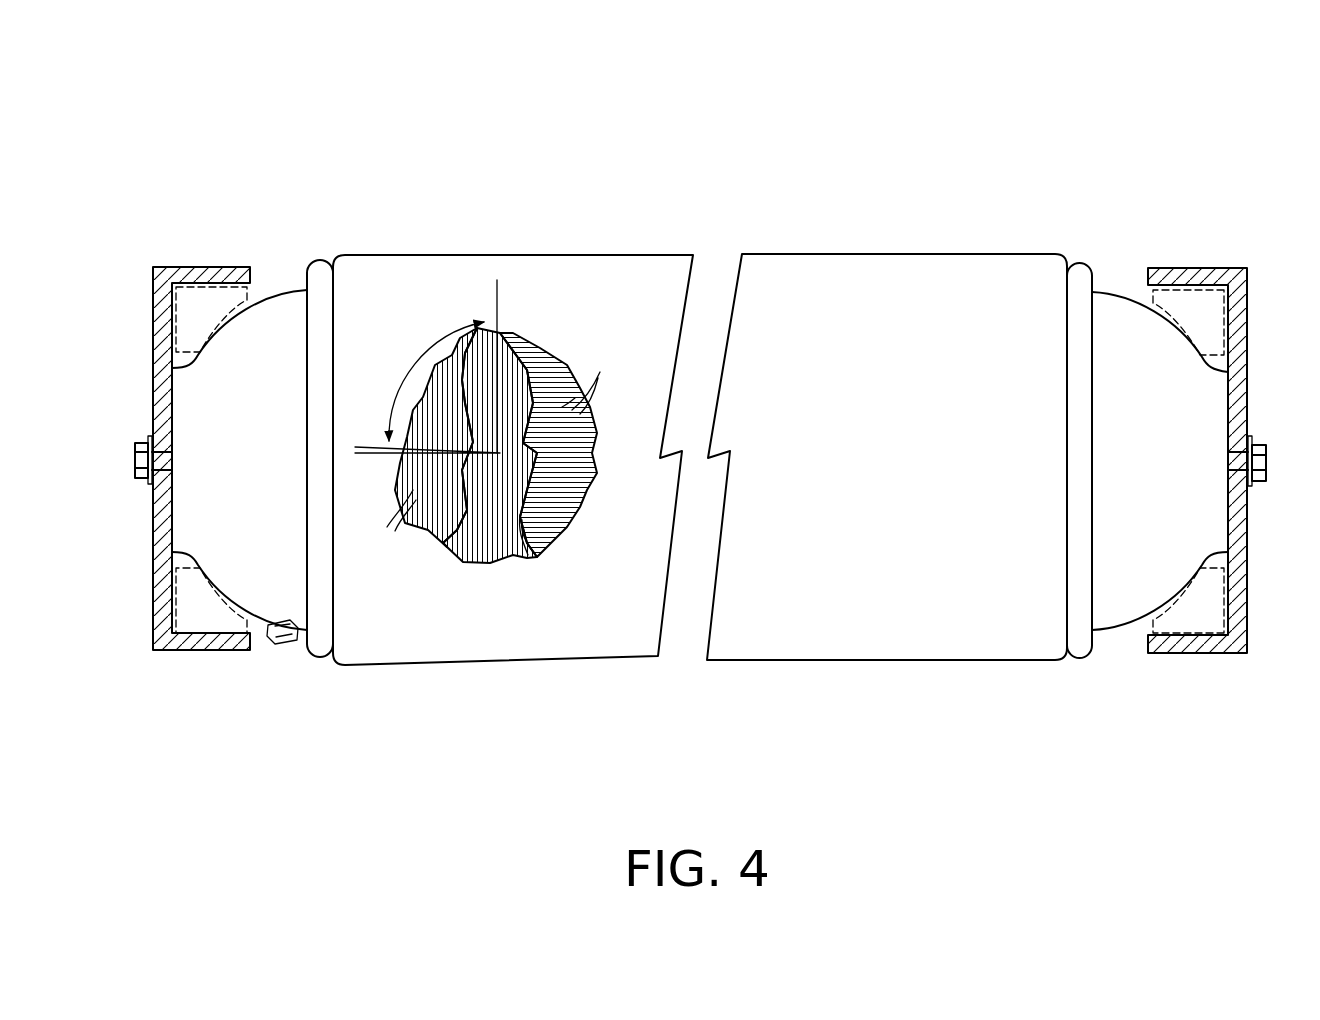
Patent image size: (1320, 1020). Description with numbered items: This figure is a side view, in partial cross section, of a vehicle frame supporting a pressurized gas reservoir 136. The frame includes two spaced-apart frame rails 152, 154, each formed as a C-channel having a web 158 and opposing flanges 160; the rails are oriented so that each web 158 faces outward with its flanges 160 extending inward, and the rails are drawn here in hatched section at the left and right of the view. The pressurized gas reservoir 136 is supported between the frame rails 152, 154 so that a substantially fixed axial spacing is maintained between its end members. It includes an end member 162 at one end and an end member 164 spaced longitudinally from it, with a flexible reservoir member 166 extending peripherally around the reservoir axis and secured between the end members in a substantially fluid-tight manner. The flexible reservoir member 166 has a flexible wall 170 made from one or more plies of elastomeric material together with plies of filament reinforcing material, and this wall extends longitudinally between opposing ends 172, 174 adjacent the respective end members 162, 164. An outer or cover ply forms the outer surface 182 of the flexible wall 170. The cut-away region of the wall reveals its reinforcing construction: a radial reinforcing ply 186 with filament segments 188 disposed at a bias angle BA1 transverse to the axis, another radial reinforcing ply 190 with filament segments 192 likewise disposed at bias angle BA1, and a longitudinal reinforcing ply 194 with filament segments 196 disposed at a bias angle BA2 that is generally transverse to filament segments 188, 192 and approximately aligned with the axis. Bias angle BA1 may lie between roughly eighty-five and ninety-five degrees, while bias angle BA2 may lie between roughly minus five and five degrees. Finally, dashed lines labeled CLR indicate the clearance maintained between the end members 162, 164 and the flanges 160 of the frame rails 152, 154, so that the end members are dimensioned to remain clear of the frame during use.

The pressurized gas reservoir 136 is at (857, 190).
The frame rail 152 is at (178, 268).
The frame rail 154 is at (1229, 268).
The web 158 is at (163, 325).
The flange 160 is at (191, 281).
The end member 162 is at (204, 432).
The end member 164 is at (1190, 413).
The flexible reservoir member 166 is at (903, 247).
The flexible wall 170 is at (950, 298).
The end 172 is at (381, 227).
The end 174 is at (1067, 243).
The outer surface 182 is at (655, 252).
The radial reinforcing ply 186 is at (435, 533).
The filament segments 188 is at (410, 512).
The radial reinforcing ply 190 is at (489, 567).
The filament segments 192 is at (528, 555).
The longitudinal reinforcing ply 194 is at (588, 481).
The filament segments 196 is at (575, 398).
The bias angle BA1 is at (423, 358).
The bias angle BA2 is at (367, 441).
The clearance CLR is at (244, 297).